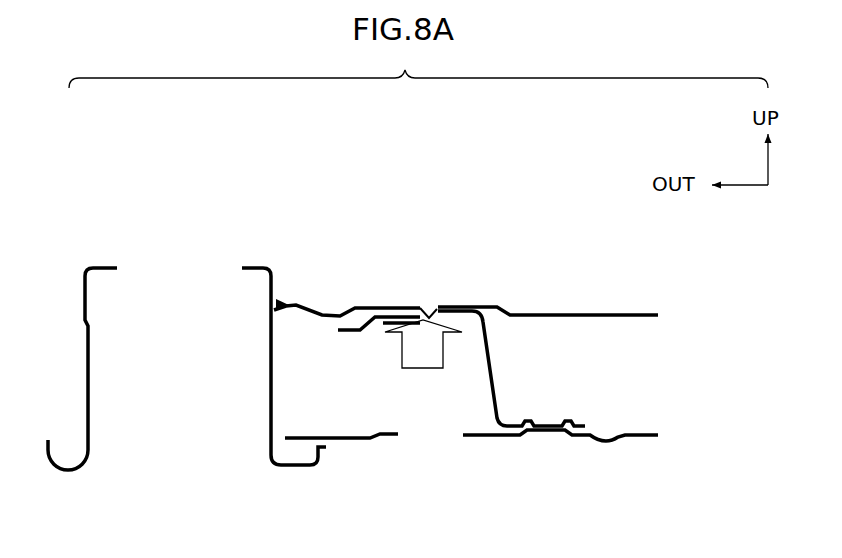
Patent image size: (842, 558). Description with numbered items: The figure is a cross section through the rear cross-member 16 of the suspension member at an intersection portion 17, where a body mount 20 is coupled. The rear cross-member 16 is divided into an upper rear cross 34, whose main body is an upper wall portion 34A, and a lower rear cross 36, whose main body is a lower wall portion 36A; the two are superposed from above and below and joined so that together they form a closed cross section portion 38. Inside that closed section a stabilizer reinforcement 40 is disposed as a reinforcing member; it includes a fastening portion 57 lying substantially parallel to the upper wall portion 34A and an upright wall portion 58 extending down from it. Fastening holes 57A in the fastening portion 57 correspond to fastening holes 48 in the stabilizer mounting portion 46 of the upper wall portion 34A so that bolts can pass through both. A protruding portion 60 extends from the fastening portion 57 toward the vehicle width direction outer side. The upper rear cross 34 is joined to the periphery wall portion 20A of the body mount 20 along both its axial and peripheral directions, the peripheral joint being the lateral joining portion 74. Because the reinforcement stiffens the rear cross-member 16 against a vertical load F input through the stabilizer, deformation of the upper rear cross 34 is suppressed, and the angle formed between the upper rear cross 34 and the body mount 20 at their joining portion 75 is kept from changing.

The body mount 20 is at (248, 247).
The periphery wall portion 20A is at (278, 382).
The lateral joining portion 74 is at (267, 300).
The joining portion 75 is at (302, 265).
The intersection portion 17 is at (371, 289).
The protruding portion 60 is at (350, 332).
The fastening portion 57 is at (381, 334).
The fastening hole 57A is at (433, 316).
The fastening hole 48 is at (421, 306).
The vertical load F is at (427, 355).
The stabilizer mounting portion 46 is at (453, 299).
The upper rear cross 34 is at (518, 296).
The upper wall portion 34A is at (554, 312).
The rear cross-member 16 is at (621, 267).
The stabilizer reinforcement 40 is at (514, 358).
The upright wall portion 58 is at (499, 390).
The closed cross section portion 38 is at (628, 385).
The lower rear cross 36 is at (494, 448).
The lower wall portion 36A is at (583, 441).